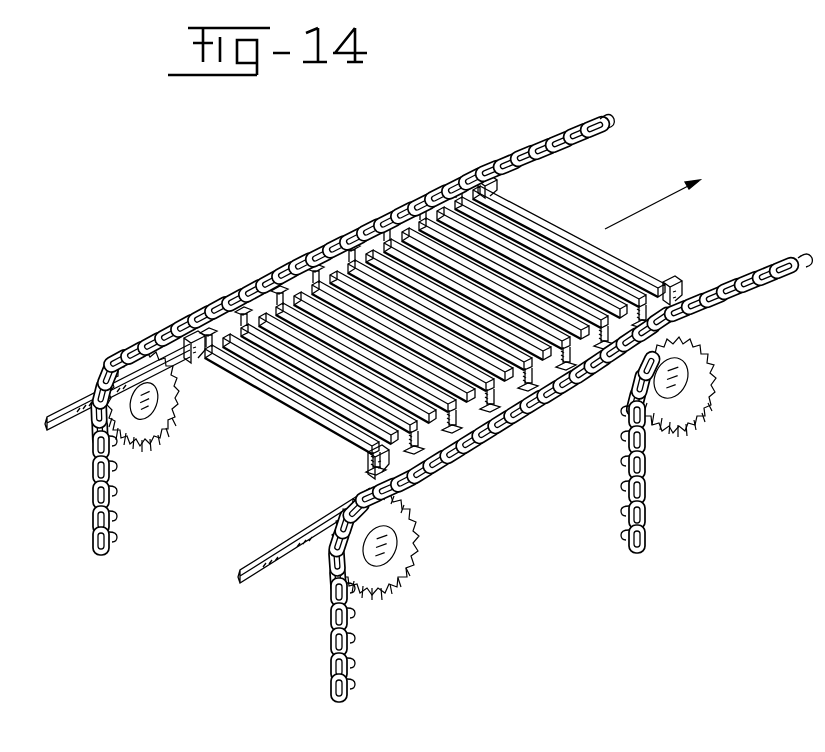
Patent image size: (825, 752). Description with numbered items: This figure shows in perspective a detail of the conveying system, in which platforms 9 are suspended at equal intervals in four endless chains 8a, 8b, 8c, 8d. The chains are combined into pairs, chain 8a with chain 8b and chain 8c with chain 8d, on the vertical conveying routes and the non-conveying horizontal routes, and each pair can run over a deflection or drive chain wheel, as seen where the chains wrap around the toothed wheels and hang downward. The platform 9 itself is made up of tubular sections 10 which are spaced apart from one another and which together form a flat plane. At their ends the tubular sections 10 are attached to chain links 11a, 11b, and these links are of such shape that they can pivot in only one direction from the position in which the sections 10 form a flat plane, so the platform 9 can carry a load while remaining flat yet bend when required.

The endless chain 8a is at (340, 660).
The endless chain 8b is at (772, 294).
The endless chain 8c is at (555, 140).
The endless chain 8d is at (554, 168).
The platform 9 is at (357, 278).
The tubular section 10 is at (300, 278).
The chain link 11a is at (481, 428).
The chain link 11b is at (541, 403).